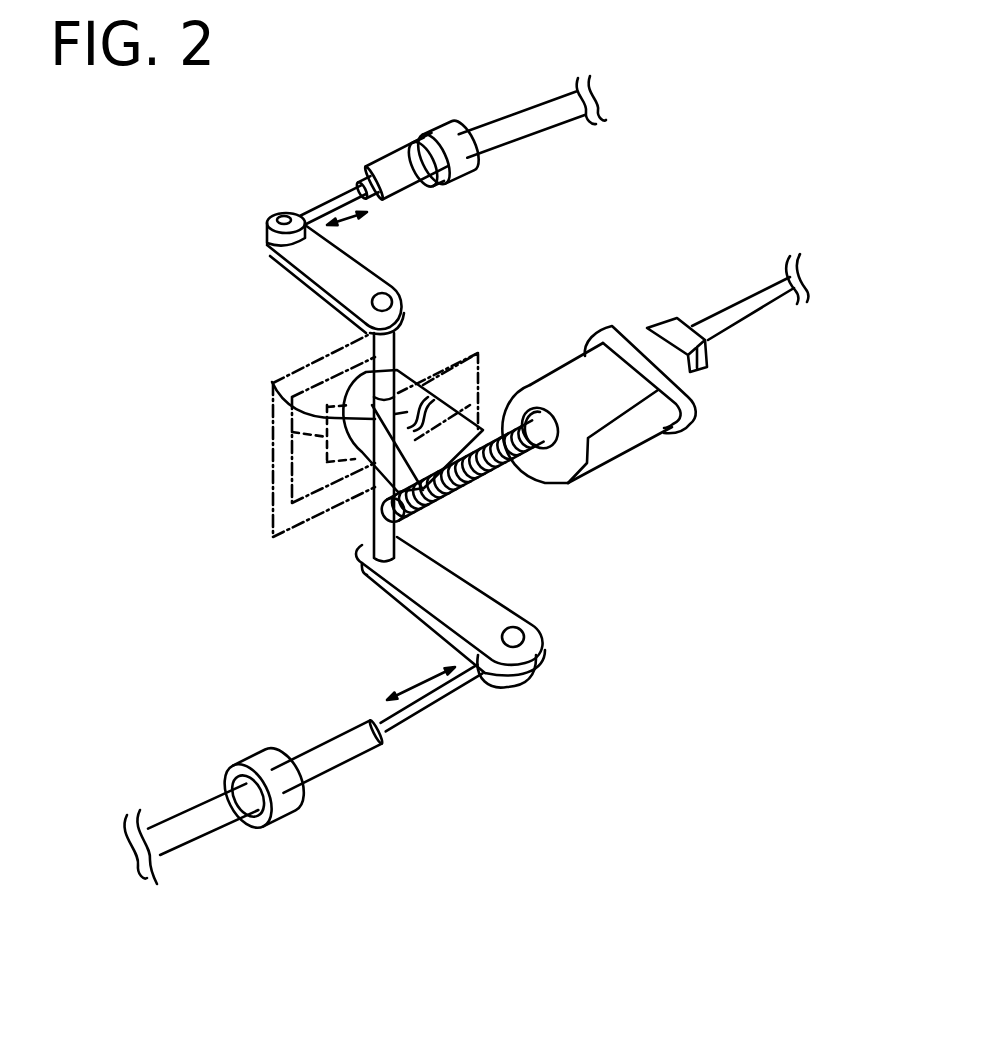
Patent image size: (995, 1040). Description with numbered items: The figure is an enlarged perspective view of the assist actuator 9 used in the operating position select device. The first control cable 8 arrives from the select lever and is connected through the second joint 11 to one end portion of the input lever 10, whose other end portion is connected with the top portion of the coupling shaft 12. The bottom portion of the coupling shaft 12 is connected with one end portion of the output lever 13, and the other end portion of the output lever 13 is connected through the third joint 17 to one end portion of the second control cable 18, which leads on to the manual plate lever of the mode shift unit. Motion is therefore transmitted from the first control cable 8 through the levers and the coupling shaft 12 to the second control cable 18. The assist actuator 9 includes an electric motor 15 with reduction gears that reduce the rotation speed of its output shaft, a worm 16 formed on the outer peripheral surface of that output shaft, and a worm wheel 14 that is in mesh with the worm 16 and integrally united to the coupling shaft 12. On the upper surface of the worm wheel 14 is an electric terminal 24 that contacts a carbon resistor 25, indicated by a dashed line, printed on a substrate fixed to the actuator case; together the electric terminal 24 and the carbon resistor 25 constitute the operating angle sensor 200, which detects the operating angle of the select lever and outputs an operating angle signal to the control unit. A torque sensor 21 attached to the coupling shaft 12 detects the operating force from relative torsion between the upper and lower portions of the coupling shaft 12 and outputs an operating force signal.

The first control cable 8 is at (514, 122).
The assist actuator 9 is at (679, 667).
The input lever 10 is at (333, 283).
The second joint 11 is at (277, 215).
The coupling shaft 12 is at (368, 522).
The output lever 13 is at (427, 597).
The worm wheel 14 is at (422, 386).
The electric motor 15 is at (634, 436).
The worm 16 is at (485, 478).
The third joint 17 is at (517, 688).
The second control cable 18 is at (210, 825).
The torque sensor 21 is at (272, 498).
The electric terminal 24 is at (272, 382).
The carbon resistor 25 is at (292, 428).
The operating angle sensor 200 is at (196, 360).